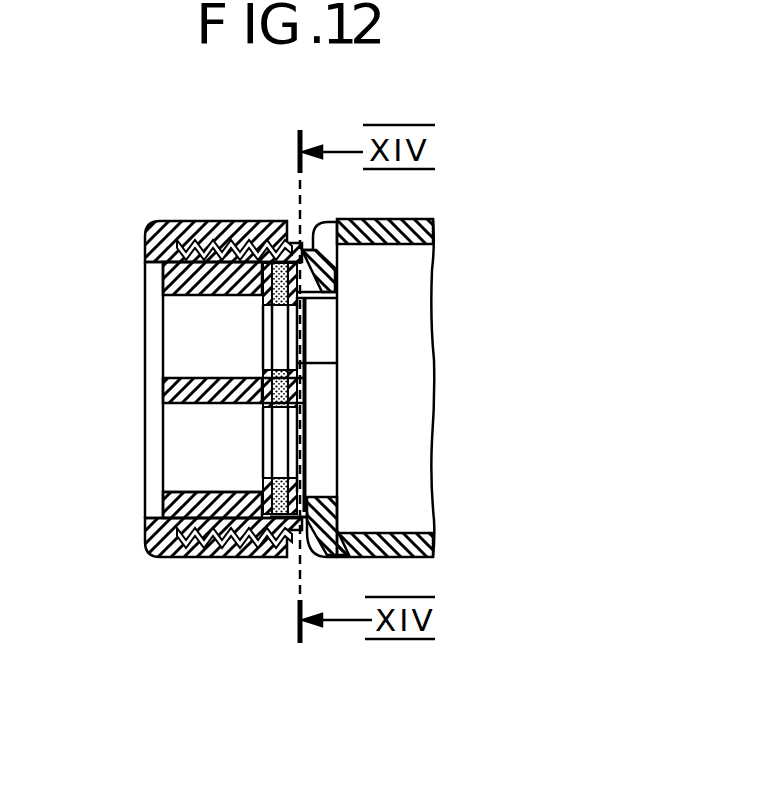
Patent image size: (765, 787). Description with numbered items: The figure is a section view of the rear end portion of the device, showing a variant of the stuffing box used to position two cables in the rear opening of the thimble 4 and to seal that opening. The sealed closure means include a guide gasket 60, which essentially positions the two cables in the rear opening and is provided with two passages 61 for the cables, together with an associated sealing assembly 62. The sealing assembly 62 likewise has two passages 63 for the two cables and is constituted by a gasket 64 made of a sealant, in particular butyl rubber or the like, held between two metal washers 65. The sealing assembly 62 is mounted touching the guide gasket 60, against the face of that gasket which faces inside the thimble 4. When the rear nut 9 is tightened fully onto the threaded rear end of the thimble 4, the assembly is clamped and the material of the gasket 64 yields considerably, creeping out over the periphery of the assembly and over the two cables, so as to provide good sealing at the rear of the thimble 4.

The thimble 4 is at (433, 547).
The nut 9 is at (163, 222).
The guide gasket 60 is at (213, 490).
The passages 61 is at (183, 322).
The sealing assembly 62 is at (312, 468).
The passages 63 is at (263, 358).
The gasket 64 is at (300, 360).
The metal washers 65 is at (296, 333).